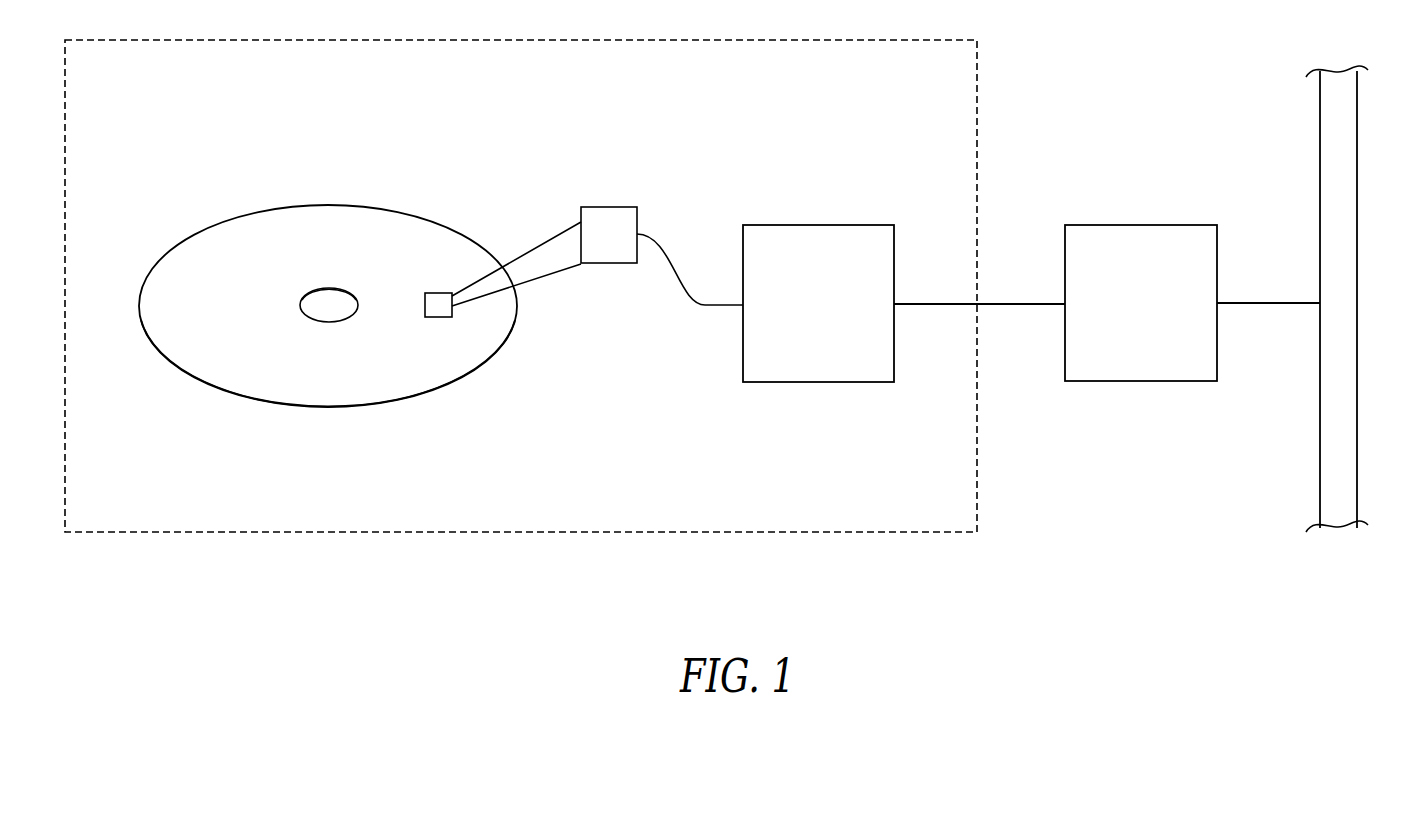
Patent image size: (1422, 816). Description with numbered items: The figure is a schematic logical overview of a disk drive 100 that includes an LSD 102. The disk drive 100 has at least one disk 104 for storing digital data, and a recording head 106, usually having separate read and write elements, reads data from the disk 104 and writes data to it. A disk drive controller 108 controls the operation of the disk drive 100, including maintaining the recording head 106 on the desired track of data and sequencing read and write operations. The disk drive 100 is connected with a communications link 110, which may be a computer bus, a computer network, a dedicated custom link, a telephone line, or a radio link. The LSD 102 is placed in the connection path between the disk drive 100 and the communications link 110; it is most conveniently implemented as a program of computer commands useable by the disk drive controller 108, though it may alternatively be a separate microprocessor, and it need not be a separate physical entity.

The disk drive 100 is at (847, 533).
The LSD 102 is at (1193, 382).
The disk 104 is at (182, 264).
The recording head 106 is at (438, 292).
The disk drive controller 108 is at (874, 382).
The communications link 110 is at (1357, 468).